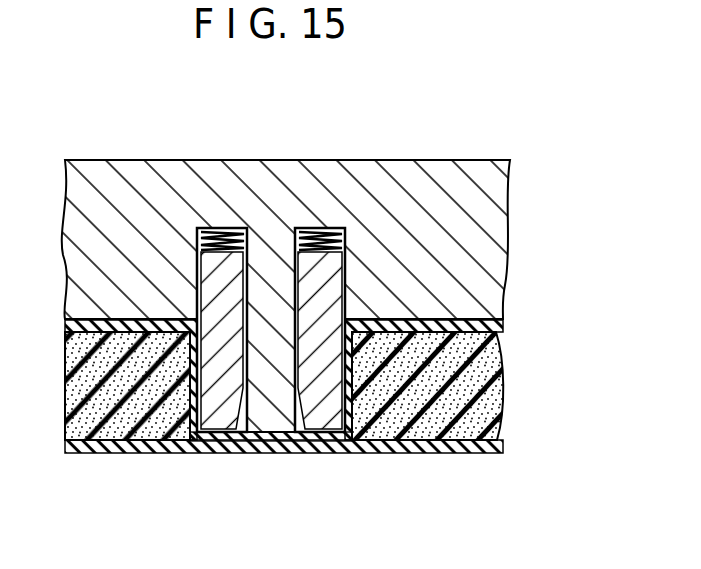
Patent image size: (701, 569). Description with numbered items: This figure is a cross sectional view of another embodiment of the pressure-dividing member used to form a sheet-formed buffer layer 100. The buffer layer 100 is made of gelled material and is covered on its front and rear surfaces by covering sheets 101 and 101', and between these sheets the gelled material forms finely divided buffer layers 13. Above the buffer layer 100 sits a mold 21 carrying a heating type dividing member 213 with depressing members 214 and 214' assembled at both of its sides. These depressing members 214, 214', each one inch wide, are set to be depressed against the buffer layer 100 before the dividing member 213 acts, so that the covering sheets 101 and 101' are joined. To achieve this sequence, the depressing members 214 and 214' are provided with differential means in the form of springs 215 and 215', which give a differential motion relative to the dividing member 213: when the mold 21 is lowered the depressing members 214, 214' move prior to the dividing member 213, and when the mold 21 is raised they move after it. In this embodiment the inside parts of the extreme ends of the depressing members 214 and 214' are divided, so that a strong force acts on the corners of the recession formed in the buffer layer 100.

The buffer layer 100 is at (514, 350).
The mold 21 is at (492, 233).
The buffer layer 13 is at (88, 385).
The covering sheet 101 is at (284, 410).
The covering sheet 101' is at (280, 483).
The dividing member 213 is at (268, 413).
The depressing member 214 is at (222, 372).
The depressing member 214' is at (330, 372).
The spring 215 is at (192, 180).
The spring 215' is at (343, 180).